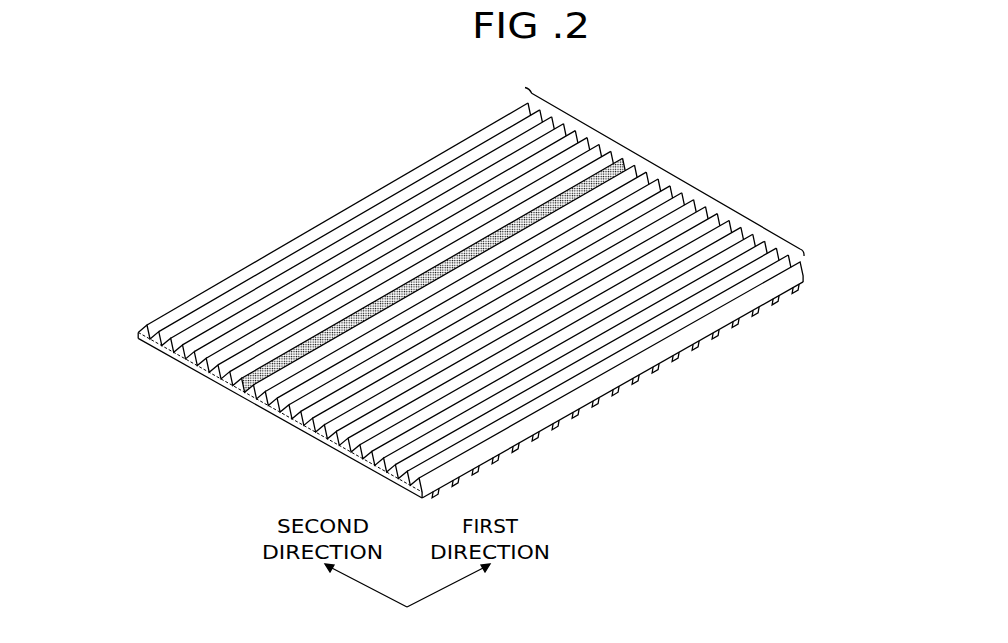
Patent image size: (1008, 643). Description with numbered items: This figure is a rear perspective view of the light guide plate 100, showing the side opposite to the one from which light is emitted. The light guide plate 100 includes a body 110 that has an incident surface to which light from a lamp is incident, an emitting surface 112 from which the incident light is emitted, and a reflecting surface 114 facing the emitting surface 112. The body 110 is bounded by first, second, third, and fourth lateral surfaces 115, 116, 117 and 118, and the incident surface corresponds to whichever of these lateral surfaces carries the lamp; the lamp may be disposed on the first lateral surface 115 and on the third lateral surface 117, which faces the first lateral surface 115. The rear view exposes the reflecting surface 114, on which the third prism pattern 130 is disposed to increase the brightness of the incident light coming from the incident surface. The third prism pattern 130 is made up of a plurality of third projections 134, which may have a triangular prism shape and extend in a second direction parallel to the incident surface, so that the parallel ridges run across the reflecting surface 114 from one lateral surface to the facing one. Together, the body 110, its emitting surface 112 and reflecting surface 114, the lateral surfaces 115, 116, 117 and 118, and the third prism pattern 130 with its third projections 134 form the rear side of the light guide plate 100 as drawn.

The light guide plate 100 is at (836, 97).
The body 110 is at (753, 314).
The emitting surface 112 is at (617, 395).
The reflecting surface 114 is at (295, 426).
The first lateral surface 115 is at (275, 249).
The second lateral surface 116 is at (592, 147).
The third lateral surface 117 is at (645, 373).
The fourth lateral surface 118 is at (340, 453).
The third prism pattern 130 is at (664, 172).
The third projections 134 is at (240, 384).